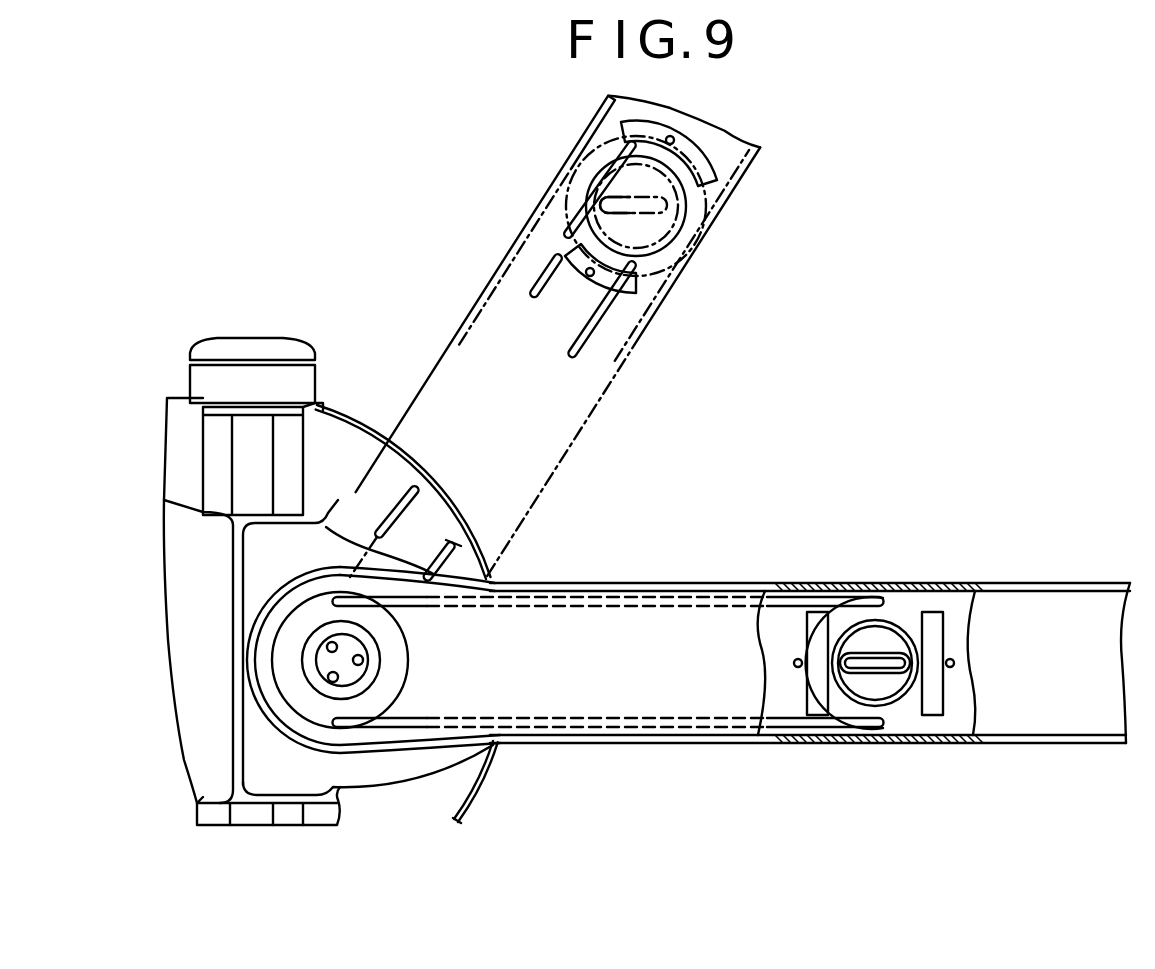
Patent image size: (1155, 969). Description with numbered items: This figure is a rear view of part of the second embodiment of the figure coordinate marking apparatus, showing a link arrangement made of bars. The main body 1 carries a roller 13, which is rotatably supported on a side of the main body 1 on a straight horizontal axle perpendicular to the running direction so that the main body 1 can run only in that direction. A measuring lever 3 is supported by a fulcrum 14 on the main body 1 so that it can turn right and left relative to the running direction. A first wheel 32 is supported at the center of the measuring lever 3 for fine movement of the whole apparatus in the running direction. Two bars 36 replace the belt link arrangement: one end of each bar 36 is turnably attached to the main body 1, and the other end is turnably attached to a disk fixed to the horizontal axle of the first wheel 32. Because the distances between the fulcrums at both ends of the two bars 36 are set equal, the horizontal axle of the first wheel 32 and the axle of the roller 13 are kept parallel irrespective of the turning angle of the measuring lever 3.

The main body 1 is at (487, 783).
The measuring lever 3 is at (732, 706).
The roller 13 is at (300, 350).
The fulcrum 14 is at (326, 666).
The first wheel 32 is at (888, 609).
The bar 36 is at (835, 611).